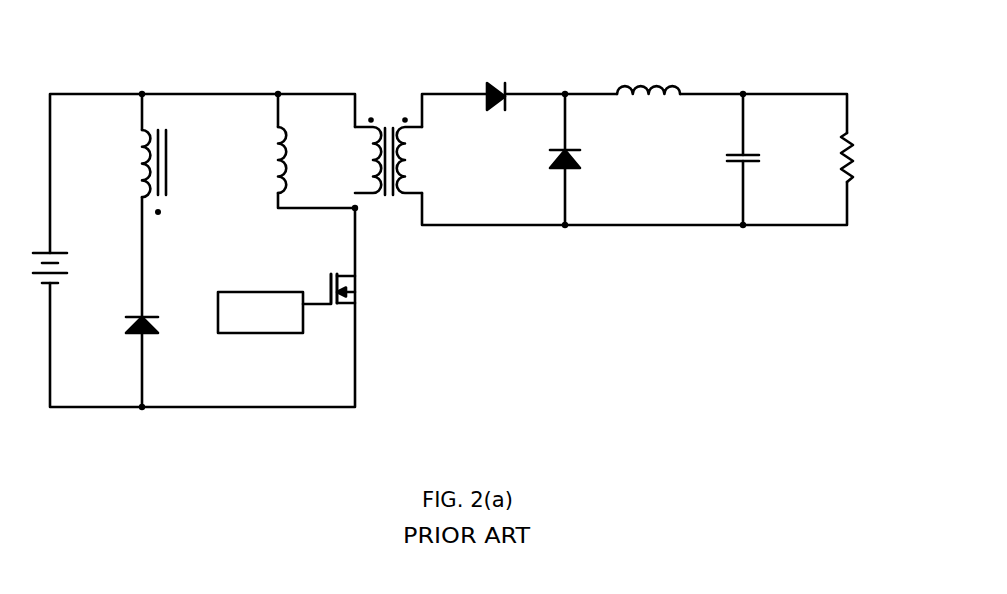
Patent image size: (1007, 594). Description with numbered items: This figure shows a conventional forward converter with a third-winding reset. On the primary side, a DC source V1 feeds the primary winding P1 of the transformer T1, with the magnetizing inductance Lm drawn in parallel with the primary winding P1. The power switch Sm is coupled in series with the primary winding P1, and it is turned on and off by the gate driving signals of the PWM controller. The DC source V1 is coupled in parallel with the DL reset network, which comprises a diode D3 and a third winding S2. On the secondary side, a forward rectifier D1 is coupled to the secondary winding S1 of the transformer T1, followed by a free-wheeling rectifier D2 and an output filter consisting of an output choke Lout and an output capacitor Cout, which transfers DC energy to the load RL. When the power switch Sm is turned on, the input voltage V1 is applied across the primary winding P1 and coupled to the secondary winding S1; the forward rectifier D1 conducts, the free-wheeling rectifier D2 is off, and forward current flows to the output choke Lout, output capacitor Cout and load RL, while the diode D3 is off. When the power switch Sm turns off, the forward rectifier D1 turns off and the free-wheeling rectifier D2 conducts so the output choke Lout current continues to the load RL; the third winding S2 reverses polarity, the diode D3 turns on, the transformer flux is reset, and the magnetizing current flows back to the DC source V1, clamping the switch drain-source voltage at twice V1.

The DC source V1 is at (66, 259).
The third winding S2 is at (133, 172).
The diode D3 is at (160, 318).
The magnetizing inductance Lm is at (257, 160).
The primary winding P1 is at (355, 155).
The secondary winding S1 is at (420, 155).
The transformer T1 is at (387, 180).
The power switch Sm is at (367, 294).
The pulse-width-modulated controller PWM is at (274, 312).
The forward rectifier D1 is at (496, 80).
The free-wheeling rectifier D2 is at (586, 160).
The output choke Lout is at (648, 76).
The output capacitor Cout is at (772, 150).
The load RL is at (868, 157).